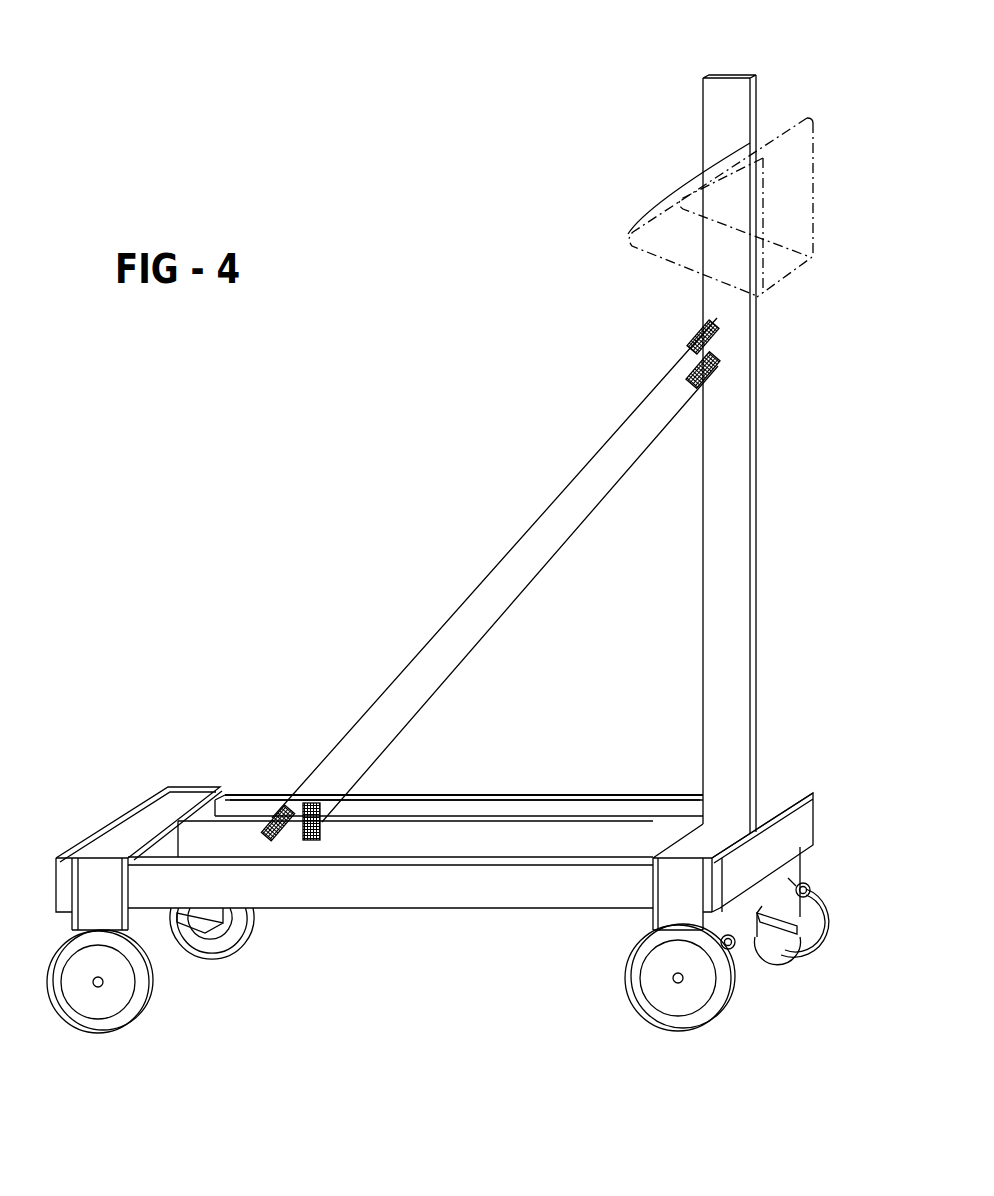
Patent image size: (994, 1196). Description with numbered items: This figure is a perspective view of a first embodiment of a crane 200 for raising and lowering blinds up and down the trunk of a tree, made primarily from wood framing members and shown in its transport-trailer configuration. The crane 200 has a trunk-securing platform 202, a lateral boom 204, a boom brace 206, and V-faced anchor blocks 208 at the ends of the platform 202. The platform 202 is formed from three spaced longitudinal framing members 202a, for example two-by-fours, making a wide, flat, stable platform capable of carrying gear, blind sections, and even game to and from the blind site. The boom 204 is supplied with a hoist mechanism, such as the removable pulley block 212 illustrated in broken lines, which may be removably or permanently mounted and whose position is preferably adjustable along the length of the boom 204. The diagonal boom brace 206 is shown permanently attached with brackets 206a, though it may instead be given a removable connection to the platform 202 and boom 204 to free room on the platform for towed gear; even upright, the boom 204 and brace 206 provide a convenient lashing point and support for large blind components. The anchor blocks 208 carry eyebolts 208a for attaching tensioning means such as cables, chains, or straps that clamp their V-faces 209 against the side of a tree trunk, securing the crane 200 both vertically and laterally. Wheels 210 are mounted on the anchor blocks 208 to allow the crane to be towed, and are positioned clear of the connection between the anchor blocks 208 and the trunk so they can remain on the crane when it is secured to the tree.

The crane 200 is at (456, 474).
The trunk-securing platform 202 is at (455, 793).
The longitudinal framing members 202a is at (590, 870).
The lateral boom 204 is at (707, 107).
The boom brace 206 is at (513, 535).
The brackets 206a is at (690, 370).
The V-faced anchor blocks 208 is at (163, 852).
The eyebolts 208a is at (753, 815).
The V-faces 209 is at (170, 926).
The wheels 210 is at (98, 1007).
The removable pulley block 212 is at (648, 211).